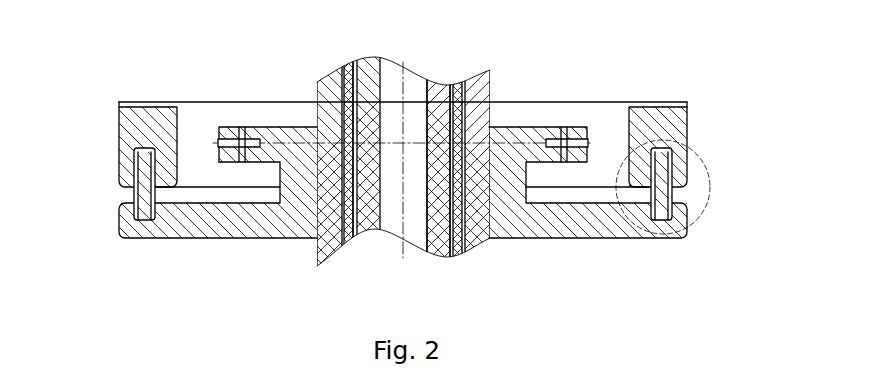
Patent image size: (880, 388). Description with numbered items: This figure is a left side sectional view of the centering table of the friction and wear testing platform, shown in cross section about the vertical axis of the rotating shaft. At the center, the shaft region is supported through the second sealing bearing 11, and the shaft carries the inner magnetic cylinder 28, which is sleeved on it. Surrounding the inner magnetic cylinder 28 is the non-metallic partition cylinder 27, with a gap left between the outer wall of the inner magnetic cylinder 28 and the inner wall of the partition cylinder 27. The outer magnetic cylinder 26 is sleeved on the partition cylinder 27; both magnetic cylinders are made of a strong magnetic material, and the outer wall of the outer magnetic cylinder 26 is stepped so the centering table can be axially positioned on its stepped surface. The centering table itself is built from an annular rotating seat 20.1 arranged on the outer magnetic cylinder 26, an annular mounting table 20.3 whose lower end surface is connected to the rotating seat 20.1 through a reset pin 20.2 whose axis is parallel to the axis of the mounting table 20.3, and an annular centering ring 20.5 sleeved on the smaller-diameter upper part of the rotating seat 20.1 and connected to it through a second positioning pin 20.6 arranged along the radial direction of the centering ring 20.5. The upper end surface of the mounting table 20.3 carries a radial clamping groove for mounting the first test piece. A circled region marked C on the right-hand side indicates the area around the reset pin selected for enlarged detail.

The second sealing bearing 11 is at (392, 229).
The rotating seat 20.1 is at (276, 224).
The reset pin 20.2 is at (139, 218).
The mounting table 20.3 is at (133, 136).
The centering ring 20.5 is at (223, 126).
The second positioning pin 20.6 is at (245, 136).
The outer magnetic cylinder 26 is at (332, 106).
The partition cylinder 27 is at (354, 109).
The inner magnetic cylinder 28 is at (439, 115).
The detail C is at (702, 163).